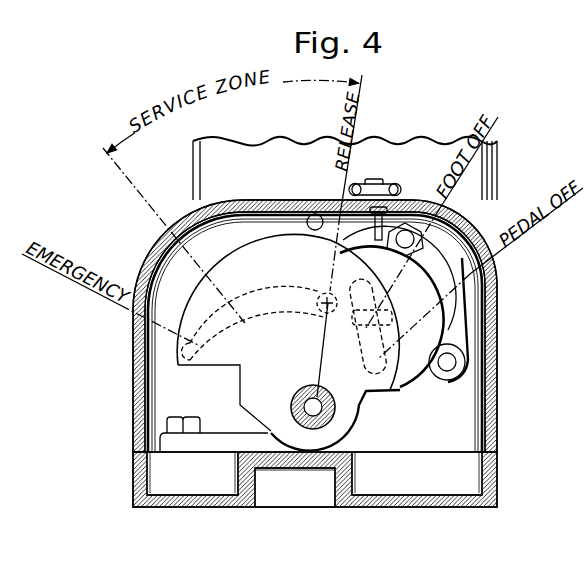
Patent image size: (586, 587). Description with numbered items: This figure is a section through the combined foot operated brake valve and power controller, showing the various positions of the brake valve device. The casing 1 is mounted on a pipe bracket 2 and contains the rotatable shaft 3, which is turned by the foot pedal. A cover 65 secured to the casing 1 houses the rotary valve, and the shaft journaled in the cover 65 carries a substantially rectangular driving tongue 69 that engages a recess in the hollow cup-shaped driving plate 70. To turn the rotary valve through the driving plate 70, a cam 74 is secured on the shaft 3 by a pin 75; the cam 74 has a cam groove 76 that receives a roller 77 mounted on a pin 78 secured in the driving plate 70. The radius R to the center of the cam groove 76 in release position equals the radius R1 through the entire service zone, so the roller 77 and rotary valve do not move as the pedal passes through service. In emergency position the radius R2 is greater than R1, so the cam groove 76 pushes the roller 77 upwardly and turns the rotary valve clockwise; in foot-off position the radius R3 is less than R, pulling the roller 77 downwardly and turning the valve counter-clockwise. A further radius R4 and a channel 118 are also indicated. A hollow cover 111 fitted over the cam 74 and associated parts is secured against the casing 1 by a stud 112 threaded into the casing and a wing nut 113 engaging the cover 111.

The casing 1 is at (193, 190).
The pipe bracket 2 is at (137, 483).
The rotatable shaft 3 is at (291, 407).
The cover 65 is at (443, 267).
The driving tongue 69 is at (388, 314).
The driving plate 70 is at (430, 328).
The cam 74 is at (203, 304).
The pin 75 is at (347, 424).
The cam groove 76 is at (253, 313).
The roller 77 is at (333, 308).
The pin 78 is at (323, 294).
The hollow cover 111 is at (157, 260).
The stud 112 is at (399, 203).
The wing nut 113 is at (381, 191).
The channel 118 is at (310, 420).
The radius R is at (326, 328).
The radius R1 is at (297, 388).
The radius R2 is at (297, 390).
The radius R3 is at (366, 333).
The radius R4 is at (377, 363).